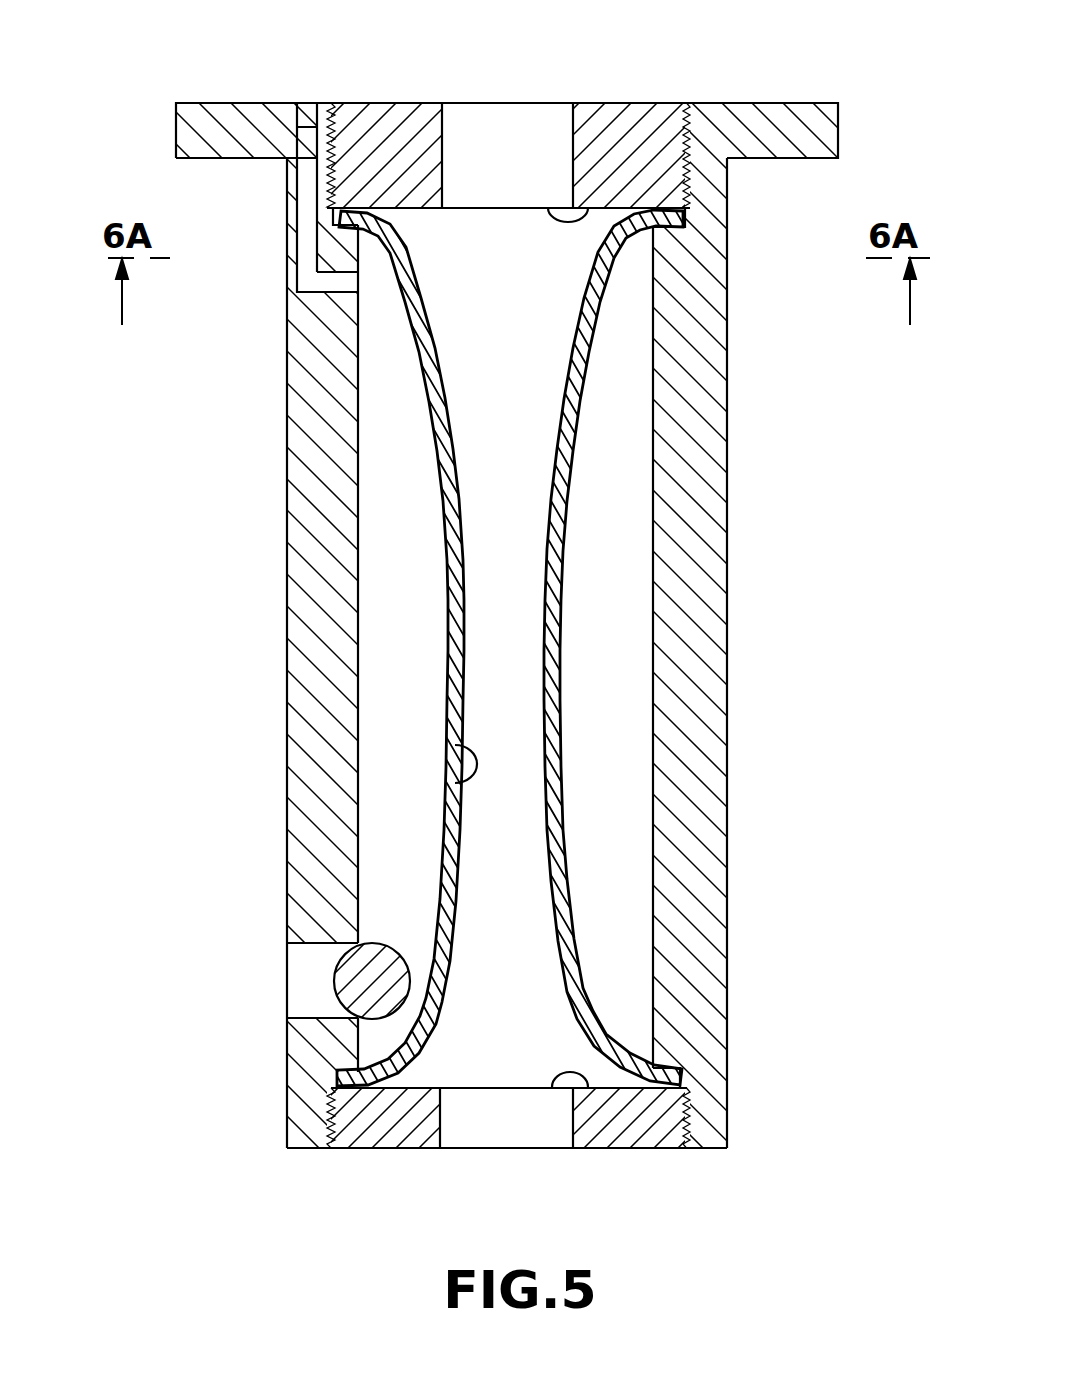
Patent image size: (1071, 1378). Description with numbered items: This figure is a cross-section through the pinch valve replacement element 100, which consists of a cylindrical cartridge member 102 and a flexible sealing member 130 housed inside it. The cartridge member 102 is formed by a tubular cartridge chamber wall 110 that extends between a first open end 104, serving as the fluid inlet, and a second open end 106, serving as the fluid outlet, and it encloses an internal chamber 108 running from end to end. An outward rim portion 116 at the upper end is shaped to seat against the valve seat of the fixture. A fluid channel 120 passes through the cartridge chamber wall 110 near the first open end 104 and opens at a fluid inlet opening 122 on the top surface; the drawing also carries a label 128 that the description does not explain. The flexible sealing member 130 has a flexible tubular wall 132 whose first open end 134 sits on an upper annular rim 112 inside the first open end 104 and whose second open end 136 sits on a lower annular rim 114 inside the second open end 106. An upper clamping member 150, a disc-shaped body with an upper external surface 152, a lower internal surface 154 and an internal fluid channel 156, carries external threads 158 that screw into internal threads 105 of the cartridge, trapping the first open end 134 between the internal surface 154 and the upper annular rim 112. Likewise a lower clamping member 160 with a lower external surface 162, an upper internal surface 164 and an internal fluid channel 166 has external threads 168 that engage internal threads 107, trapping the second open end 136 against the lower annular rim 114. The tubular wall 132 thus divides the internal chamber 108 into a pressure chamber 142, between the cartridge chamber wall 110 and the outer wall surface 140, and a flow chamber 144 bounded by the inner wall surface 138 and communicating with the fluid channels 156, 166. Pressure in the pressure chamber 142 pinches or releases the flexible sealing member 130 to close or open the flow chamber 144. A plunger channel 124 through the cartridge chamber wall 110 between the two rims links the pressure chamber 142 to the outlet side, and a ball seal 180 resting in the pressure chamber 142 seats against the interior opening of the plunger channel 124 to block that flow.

The pinch valve replacement element 100 is at (133, 490).
The cylindrical cartridge member 102 is at (728, 458).
The first open end 104 is at (776, 100).
The internal threads 105 is at (692, 135).
The second open end 106 is at (705, 1152).
The internal threads 107 is at (655, 1150).
The internal chamber 108 is at (483, 414).
The cartridge chamber wall 110 is at (700, 612).
The upper annular rim 112 is at (678, 222).
The lower annular rim 114 is at (660, 1075).
The rim portion 116 is at (795, 160).
The fluid channel 120 is at (308, 192).
The fluid inlet opening 122 is at (312, 90).
The plunger channel 124 is at (298, 970).
The upper housing portion 128 is at (300, 142).
The flexible sealing member 130 is at (443, 666).
The flexible tubular wall 132 is at (455, 522).
The first open end 134 is at (413, 240).
The second open end 136 is at (437, 1105).
The inner wall surface 138 is at (453, 747).
The outer wall surface 140 is at (442, 855).
The pressure chamber 142 is at (378, 848).
The flow chamber 144 is at (482, 500).
The upper clamping member 150 is at (625, 130).
The upper external surface 152 is at (583, 103).
The lower internal surface 154 is at (550, 200).
The internal fluid channel 156 is at (472, 135).
The external threads 158 is at (683, 157).
The lower clamping member 160 is at (592, 1150).
The lower external surface 162 is at (613, 1148).
The upper internal surface 164 is at (553, 1073).
The internal fluid channel 166 is at (463, 1138).
The external threads 168 is at (660, 1143).
The ball seal 180 is at (353, 987).